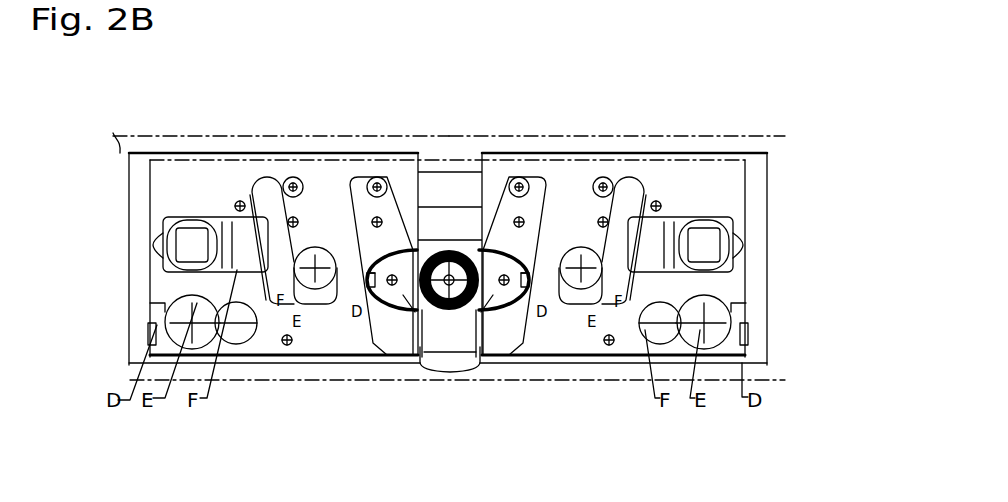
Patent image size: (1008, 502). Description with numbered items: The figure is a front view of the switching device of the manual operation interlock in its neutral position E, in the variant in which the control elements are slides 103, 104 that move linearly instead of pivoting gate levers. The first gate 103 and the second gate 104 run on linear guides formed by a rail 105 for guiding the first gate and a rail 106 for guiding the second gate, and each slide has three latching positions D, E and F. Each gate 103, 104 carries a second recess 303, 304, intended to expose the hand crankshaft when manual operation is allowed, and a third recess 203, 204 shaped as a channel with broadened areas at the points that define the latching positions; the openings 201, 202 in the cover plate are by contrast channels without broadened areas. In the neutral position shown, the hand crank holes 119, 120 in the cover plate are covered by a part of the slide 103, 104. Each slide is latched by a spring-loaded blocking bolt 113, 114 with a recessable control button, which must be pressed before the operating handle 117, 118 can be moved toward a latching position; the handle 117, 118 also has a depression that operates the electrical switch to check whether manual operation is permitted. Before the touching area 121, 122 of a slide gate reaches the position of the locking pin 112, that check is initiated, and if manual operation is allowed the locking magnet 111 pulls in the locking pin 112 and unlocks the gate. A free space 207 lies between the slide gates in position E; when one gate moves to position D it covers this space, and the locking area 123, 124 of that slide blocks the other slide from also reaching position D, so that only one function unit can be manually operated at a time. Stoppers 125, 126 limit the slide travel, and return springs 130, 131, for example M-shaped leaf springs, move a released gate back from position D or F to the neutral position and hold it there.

The first gate 103 is at (258, 335).
The second gate 104 is at (628, 340).
The rail for guiding the first gate 105 is at (143, 135).
The rail for guiding the second gate 106 is at (785, 148).
The solenoid 111 is at (445, 265).
The electrically operated blocking element 112 is at (449, 280).
The locking element 113 is at (195, 330).
The locking element 114 is at (706, 337).
The handle 117 is at (313, 330).
The handle 118 is at (583, 330).
The opening in the cover plate 119 is at (167, 223).
The opening in the cover plate 120 is at (742, 232).
The touching area of the first gate 121 is at (376, 295).
The touching area of the second gate 122 is at (518, 295).
The locking area of the first gate 123 is at (410, 325).
The locking area of the second gate 124 is at (488, 325).
The stopper 125 is at (258, 228).
The stopper 126 is at (645, 228).
The return spring 130 is at (348, 182).
The return spring 131 is at (546, 182).
The opening in the cover plate 201 is at (340, 235).
The opening in the cover plate 202 is at (553, 235).
The third recess in the gate 203 is at (157, 308).
The third recess in the gate 204 is at (727, 308).
The free space 207 is at (450, 378).
The second recess in the gate 303 is at (157, 237).
The second recess in the gate 304 is at (743, 250).